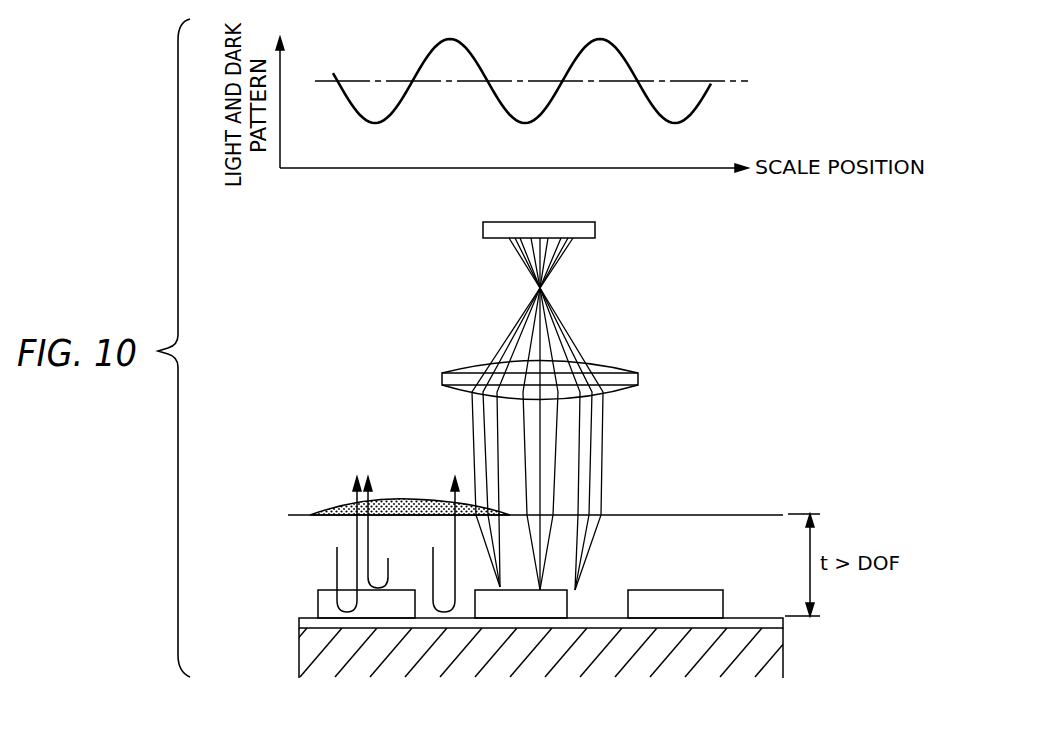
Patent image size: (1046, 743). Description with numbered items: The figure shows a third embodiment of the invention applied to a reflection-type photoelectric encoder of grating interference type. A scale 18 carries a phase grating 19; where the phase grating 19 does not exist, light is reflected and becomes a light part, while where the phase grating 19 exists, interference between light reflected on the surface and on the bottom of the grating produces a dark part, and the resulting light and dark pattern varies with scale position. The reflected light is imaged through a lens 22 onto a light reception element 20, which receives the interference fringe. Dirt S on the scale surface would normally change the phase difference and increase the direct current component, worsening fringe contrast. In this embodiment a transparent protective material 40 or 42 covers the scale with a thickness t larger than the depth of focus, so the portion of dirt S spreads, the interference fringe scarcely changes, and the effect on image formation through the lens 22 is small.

The scale 18 is at (310, 633).
The phase grating 19 is at (327, 599).
The light reception element 20 is at (595, 230).
The lens 22 is at (638, 379).
The transparent protective material 40 is at (336, 544).
The transparent protective material 42 is at (323, 541).
The dirt S is at (343, 506).